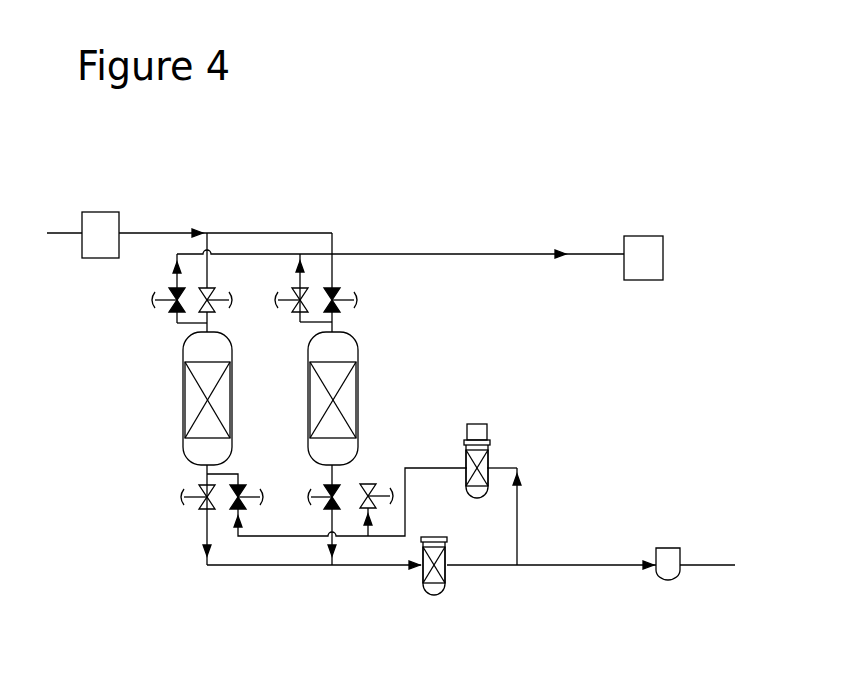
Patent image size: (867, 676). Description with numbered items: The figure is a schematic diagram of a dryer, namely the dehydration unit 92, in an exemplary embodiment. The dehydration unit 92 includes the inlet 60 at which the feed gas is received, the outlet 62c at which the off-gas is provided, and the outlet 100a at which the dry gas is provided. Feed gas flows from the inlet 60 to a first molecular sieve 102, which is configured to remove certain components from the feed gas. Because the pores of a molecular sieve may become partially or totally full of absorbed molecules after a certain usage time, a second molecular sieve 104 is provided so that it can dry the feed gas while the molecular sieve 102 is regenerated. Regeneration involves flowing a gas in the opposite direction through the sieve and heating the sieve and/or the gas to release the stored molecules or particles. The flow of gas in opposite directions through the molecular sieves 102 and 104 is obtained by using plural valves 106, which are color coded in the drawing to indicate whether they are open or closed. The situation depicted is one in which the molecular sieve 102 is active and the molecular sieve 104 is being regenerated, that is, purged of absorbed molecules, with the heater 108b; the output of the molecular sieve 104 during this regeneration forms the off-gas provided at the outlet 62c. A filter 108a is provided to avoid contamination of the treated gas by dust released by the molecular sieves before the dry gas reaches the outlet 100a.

The dehydration unit 92 is at (427, 135).
The inlet 60 is at (97, 212).
The outlet 62c is at (640, 236).
The first molecular sieve 102 is at (183, 398).
The second molecular sieve 104 is at (358, 392).
The valves 106 is at (150, 298).
The filter 108a is at (447, 583).
The heater 108b is at (490, 441).
The outlet 100a is at (668, 580).